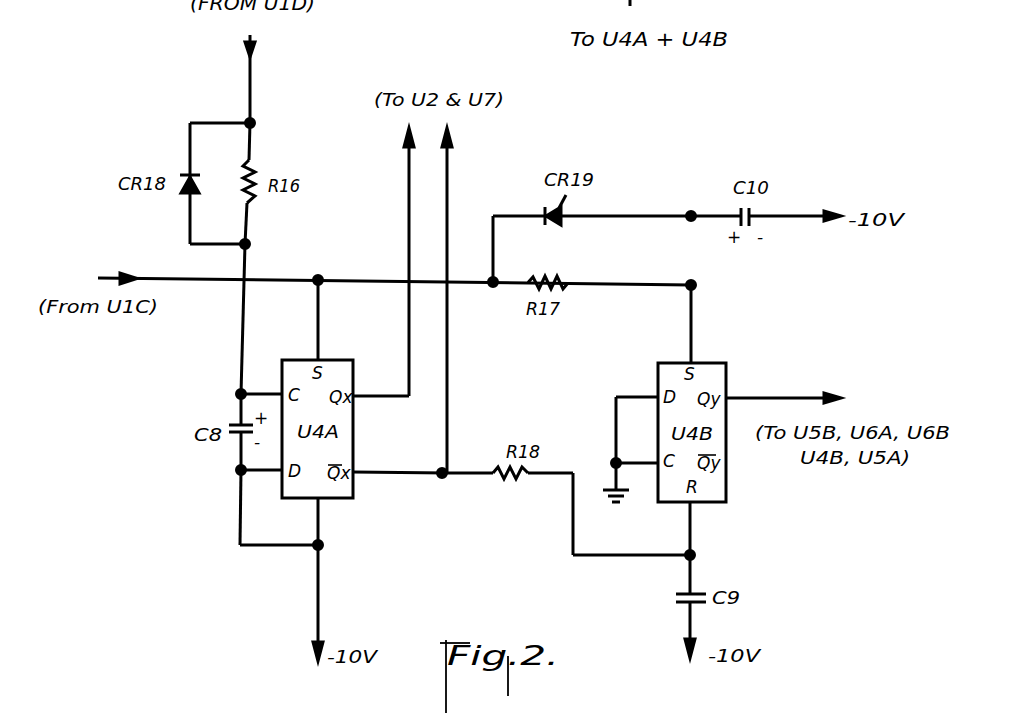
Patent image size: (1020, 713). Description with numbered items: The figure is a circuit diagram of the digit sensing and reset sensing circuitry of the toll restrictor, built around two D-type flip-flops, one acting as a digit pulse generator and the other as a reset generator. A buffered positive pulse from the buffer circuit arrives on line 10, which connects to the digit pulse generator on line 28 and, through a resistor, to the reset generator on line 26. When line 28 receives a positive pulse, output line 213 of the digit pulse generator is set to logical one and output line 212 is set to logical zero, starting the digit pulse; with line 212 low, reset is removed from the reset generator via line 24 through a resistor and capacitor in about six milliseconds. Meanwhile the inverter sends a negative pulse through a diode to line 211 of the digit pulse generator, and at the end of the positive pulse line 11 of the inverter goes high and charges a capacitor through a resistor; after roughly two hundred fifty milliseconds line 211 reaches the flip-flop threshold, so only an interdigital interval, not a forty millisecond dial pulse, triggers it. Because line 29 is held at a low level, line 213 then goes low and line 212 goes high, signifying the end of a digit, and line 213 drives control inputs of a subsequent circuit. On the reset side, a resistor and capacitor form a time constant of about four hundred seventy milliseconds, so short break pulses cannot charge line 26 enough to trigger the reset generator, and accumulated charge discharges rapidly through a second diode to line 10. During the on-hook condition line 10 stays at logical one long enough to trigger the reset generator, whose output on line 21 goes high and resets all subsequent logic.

The line from U1C 10 is at (195, 285).
The line of U1D 11 is at (253, 93).
The output line of U4B 21 is at (797, 394).
The reset line of U4B 24 is at (692, 538).
The set input line of U4B 26 is at (693, 326).
The set input line of U4A 28 is at (321, 324).
The D input line of U4A 29 is at (259, 480).
The clock input line of U4A 211 is at (263, 392).
The complementary output line of U4A 212 is at (393, 476).
The output line of U4A 213 is at (379, 392).